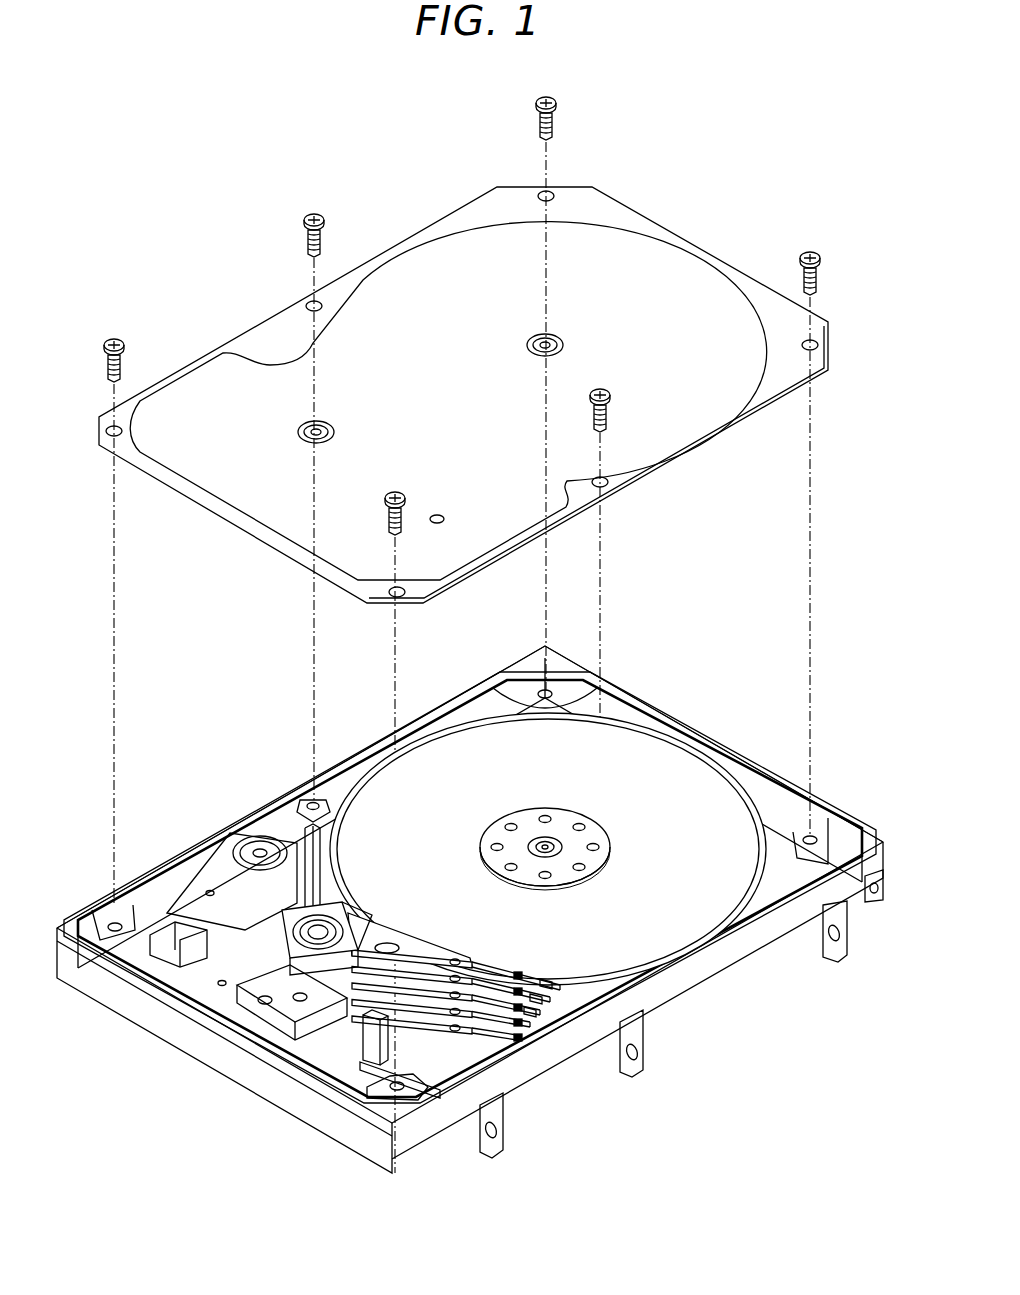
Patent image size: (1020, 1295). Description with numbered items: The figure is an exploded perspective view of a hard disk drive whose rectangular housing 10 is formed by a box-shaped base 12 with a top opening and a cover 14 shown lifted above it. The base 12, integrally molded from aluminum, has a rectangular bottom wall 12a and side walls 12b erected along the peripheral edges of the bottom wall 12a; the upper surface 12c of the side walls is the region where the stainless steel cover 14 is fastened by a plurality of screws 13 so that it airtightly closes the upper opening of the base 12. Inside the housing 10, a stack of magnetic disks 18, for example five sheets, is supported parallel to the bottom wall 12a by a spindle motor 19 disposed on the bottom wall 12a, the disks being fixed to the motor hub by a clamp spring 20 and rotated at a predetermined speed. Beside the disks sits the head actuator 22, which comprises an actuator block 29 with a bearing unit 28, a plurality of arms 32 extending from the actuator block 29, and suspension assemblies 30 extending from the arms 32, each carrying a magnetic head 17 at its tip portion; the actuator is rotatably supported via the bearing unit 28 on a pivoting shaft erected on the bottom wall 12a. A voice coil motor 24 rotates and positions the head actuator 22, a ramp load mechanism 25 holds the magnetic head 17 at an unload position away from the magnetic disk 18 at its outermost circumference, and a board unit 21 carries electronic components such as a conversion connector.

The housing 10 is at (840, 510).
The base 12 is at (675, 1028).
The bottom wall 12a is at (457, 1053).
The side walls 12b is at (650, 705).
The top surface of side wall 12c is at (765, 895).
The screws 13 is at (550, 98).
The cover 14 is at (661, 262).
The magnetic heads 17 is at (549, 998).
The magnetic disks 18 is at (665, 777).
The spindle motor 19 is at (552, 838).
The clamp spring 20 is at (500, 843).
The board unit 21 is at (345, 1058).
The head actuator 22 is at (423, 935).
The voice coil motor 24 is at (220, 956).
The ramp load mechanism 25 is at (560, 992).
The bearing unit 28 is at (330, 907).
The actuator block 29 is at (347, 917).
The suspension assemblies 30 is at (520, 963).
The arms 32 is at (437, 960).